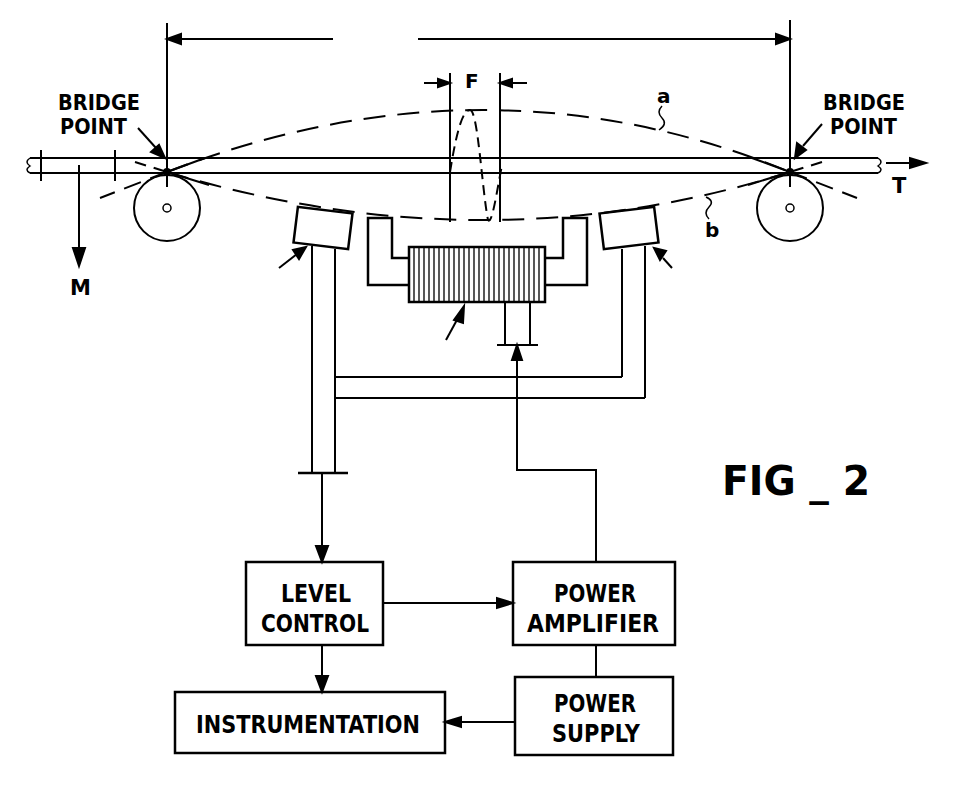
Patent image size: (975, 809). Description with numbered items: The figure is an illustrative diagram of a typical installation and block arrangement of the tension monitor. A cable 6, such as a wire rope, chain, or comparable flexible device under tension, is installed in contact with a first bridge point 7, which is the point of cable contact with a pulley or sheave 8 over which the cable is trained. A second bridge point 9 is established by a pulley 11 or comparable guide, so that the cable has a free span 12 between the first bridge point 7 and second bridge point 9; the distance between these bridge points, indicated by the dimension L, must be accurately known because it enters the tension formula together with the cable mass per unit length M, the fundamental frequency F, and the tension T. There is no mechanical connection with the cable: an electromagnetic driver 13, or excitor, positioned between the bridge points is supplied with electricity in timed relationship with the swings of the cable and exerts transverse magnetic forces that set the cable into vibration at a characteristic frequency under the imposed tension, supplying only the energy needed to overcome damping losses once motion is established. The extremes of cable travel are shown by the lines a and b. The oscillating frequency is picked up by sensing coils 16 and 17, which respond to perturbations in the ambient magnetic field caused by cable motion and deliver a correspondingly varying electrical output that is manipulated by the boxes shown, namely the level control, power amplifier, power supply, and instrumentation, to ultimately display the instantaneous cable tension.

The cable 6 is at (621, 165).
The first bridge point 7 is at (167, 172).
The pulley or sheave 8 is at (199, 216).
The second bridge point 9 is at (790, 172).
The pulley 11 is at (820, 226).
The free span 12 is at (478, 103).
The electromagnetic driver 13 is at (536, 302).
The coil 16 is at (300, 229).
The coil 17 is at (656, 227).